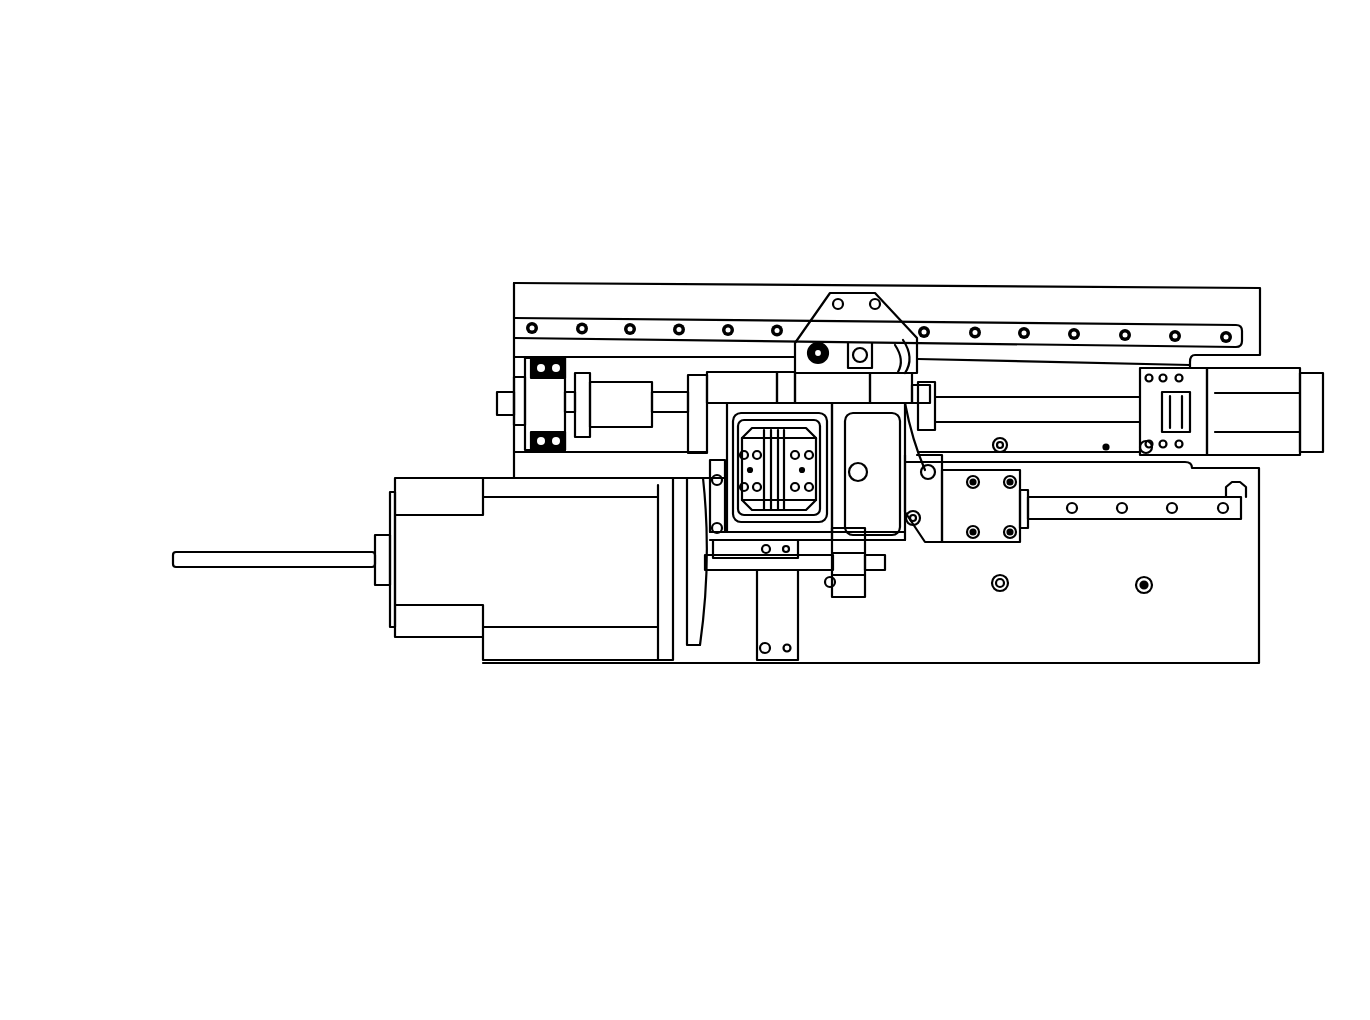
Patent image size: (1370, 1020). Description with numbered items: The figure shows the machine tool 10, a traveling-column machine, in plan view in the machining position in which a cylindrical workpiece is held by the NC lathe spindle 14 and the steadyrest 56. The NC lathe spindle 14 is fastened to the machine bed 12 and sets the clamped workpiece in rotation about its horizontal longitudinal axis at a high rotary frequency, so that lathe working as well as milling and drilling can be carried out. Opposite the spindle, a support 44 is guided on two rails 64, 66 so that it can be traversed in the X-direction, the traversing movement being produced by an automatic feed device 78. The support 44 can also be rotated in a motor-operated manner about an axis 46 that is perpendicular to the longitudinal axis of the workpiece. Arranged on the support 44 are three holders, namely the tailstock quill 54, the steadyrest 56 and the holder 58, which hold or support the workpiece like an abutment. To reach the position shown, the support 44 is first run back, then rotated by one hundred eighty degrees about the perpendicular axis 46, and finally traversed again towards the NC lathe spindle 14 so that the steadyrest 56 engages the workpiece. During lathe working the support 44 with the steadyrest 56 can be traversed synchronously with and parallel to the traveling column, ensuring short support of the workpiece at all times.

The machine tool 10 is at (353, 210).
The machine bed 12 is at (1125, 660).
The NC lathe spindle 14 is at (542, 642).
The support 44 is at (887, 327).
The axis 46 is at (863, 480).
The tailstock quill 54 is at (885, 387).
The steadyrest 56 is at (847, 583).
The holder 58 is at (767, 407).
The rail 64 is at (1207, 510).
The rail 66 is at (1200, 337).
The automatic feed device 78 is at (507, 378).